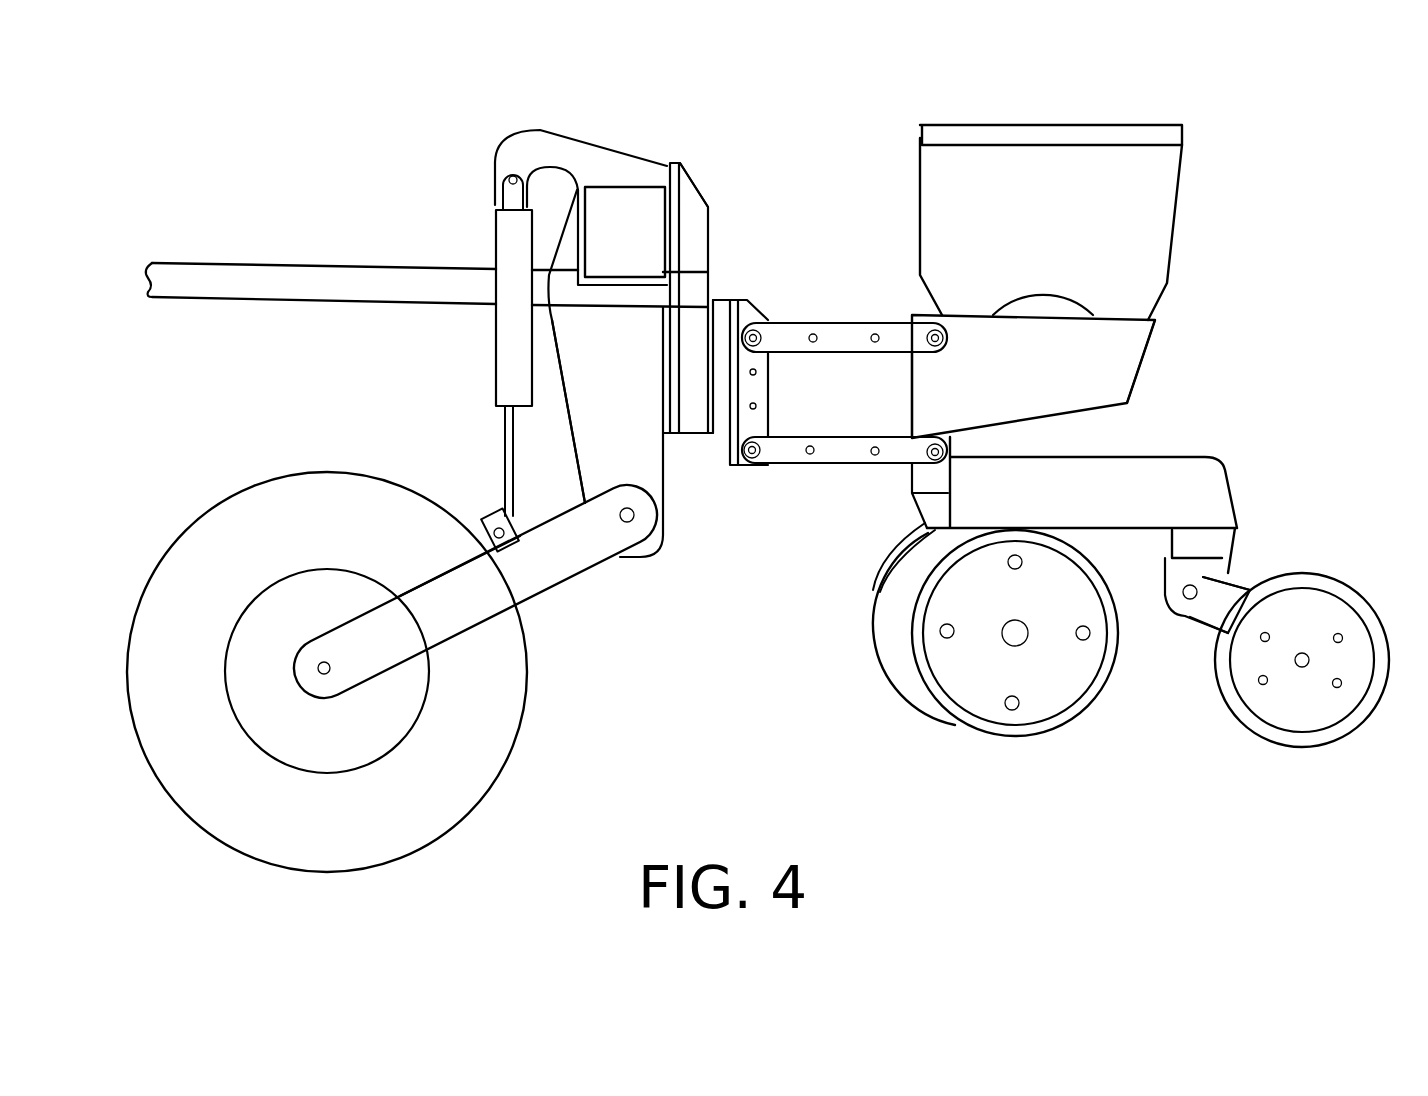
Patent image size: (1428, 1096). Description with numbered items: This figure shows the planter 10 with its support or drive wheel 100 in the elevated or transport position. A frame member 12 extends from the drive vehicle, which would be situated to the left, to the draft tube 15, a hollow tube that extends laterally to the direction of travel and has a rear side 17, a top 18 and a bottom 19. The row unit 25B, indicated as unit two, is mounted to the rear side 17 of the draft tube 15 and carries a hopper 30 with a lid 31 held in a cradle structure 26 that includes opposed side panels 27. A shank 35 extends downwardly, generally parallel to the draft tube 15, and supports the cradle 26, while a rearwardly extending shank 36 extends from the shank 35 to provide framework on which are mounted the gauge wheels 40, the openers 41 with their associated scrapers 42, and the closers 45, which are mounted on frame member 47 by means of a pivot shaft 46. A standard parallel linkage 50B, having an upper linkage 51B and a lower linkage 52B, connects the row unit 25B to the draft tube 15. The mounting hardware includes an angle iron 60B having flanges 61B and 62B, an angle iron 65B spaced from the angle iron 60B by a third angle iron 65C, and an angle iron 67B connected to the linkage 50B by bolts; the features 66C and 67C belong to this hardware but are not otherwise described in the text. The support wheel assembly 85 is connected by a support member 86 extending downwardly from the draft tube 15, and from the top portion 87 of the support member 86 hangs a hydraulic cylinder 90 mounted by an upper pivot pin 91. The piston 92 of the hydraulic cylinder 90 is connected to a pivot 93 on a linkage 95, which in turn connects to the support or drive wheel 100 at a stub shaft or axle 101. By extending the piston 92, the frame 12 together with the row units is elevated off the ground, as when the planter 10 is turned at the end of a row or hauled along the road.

The planter 10 is at (177, 85).
The frame member 12 is at (275, 268).
The draft tube 15 is at (624, 177).
The rear side 17 is at (697, 273).
The top 18 is at (596, 186).
The bottom 19 is at (595, 286).
The row unit 25B is at (1337, 226).
The cradle structure 26 is at (1158, 355).
The side panel 27 is at (1069, 370).
The hopper 30 is at (1187, 242).
The lid 31 is at (1126, 130).
The shank 35 is at (920, 475).
The rearwardly extending shank 36 is at (1212, 496).
The gauge wheel 40 is at (972, 688).
The opener 41 is at (893, 617).
The scraper 42 is at (880, 577).
The closer 45 is at (1328, 608).
The pivot shaft 46 is at (1198, 590).
The frame member 47 is at (1213, 607).
The parallel linkage 50B is at (847, 318).
The upper linkage 51B is at (853, 343).
The lower linkage 52B is at (790, 450).
The angle iron 60B is at (712, 190).
The flange 61B is at (662, 348).
The flange 62B is at (693, 277).
The angle iron 65B is at (772, 298).
The third angle iron 65C is at (724, 298).
The mounting hole 66C is at (727, 423).
The angle iron 67B is at (755, 388).
The mounting flange 67C is at (713, 425).
The support wheel assembly 85 is at (612, 572).
The support member 86 is at (607, 445).
The top portion 87 is at (527, 150).
The hydraulic cylinder 90 is at (490, 338).
The upper pivot pin 91 is at (506, 181).
The piston 92 is at (506, 432).
The pivot 93 is at (497, 525).
The linkage 95 is at (523, 587).
The support or drive wheel 100 is at (465, 748).
The stub shaft or axle 101 is at (318, 670).